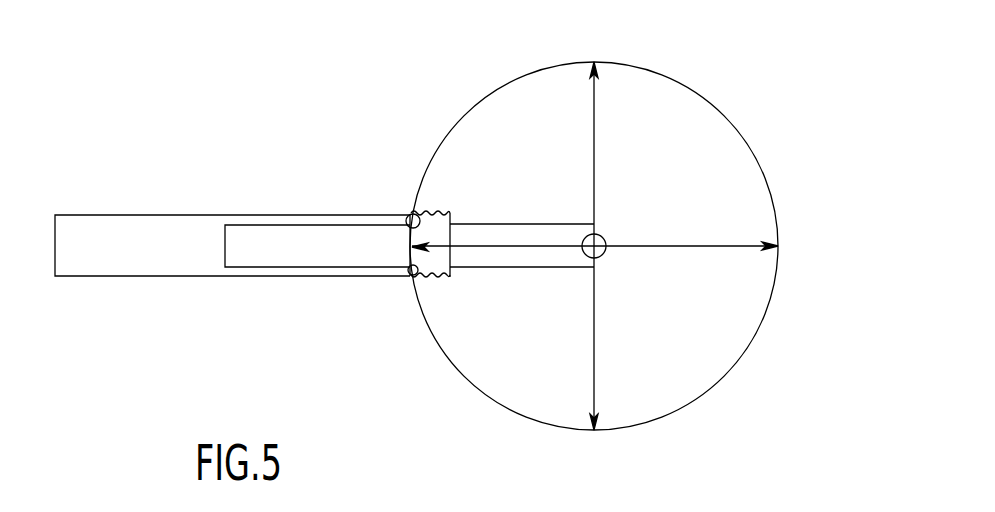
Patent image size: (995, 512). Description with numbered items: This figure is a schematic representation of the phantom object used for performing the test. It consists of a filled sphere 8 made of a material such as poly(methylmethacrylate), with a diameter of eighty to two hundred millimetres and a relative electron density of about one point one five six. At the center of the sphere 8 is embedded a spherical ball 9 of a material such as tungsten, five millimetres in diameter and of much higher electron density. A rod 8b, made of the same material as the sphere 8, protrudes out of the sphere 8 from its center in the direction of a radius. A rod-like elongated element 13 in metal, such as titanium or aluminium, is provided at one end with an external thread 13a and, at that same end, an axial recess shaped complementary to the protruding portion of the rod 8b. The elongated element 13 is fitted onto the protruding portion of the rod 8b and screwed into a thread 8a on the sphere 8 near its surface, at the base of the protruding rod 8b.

The filled sphere 8 is at (655, 72).
The thread 8a is at (435, 213).
The rod 8b is at (283, 252).
The spherical ball 9 is at (607, 238).
The rod-like elongated element 13 is at (273, 215).
The external thread 13a is at (403, 217).